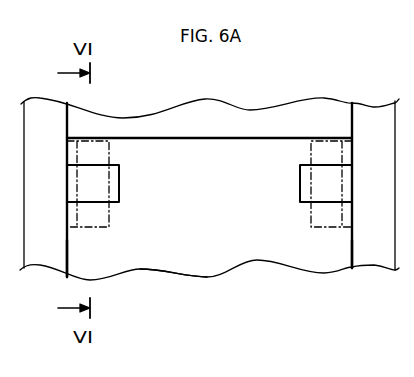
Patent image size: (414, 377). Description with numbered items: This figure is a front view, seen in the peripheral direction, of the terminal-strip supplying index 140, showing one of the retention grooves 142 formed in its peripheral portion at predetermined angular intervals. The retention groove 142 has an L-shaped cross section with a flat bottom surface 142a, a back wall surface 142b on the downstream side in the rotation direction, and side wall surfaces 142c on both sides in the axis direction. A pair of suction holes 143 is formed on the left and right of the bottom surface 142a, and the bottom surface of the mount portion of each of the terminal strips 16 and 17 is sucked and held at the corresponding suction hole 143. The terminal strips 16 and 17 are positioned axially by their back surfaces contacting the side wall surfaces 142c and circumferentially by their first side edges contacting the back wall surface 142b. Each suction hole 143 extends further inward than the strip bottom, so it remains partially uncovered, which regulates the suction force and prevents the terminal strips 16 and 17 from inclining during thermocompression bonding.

The terminal-strip supplying index 140 is at (259, 117).
The retention groove 142 is at (234, 247).
The bottom surface 142a is at (182, 252).
The back wall surface 142b is at (172, 138).
The side wall surface 142c is at (67, 247).
The suction hole 143 is at (114, 182).
The terminal strip 16 is at (109, 224).
The terminal strip 17 is at (310, 224).